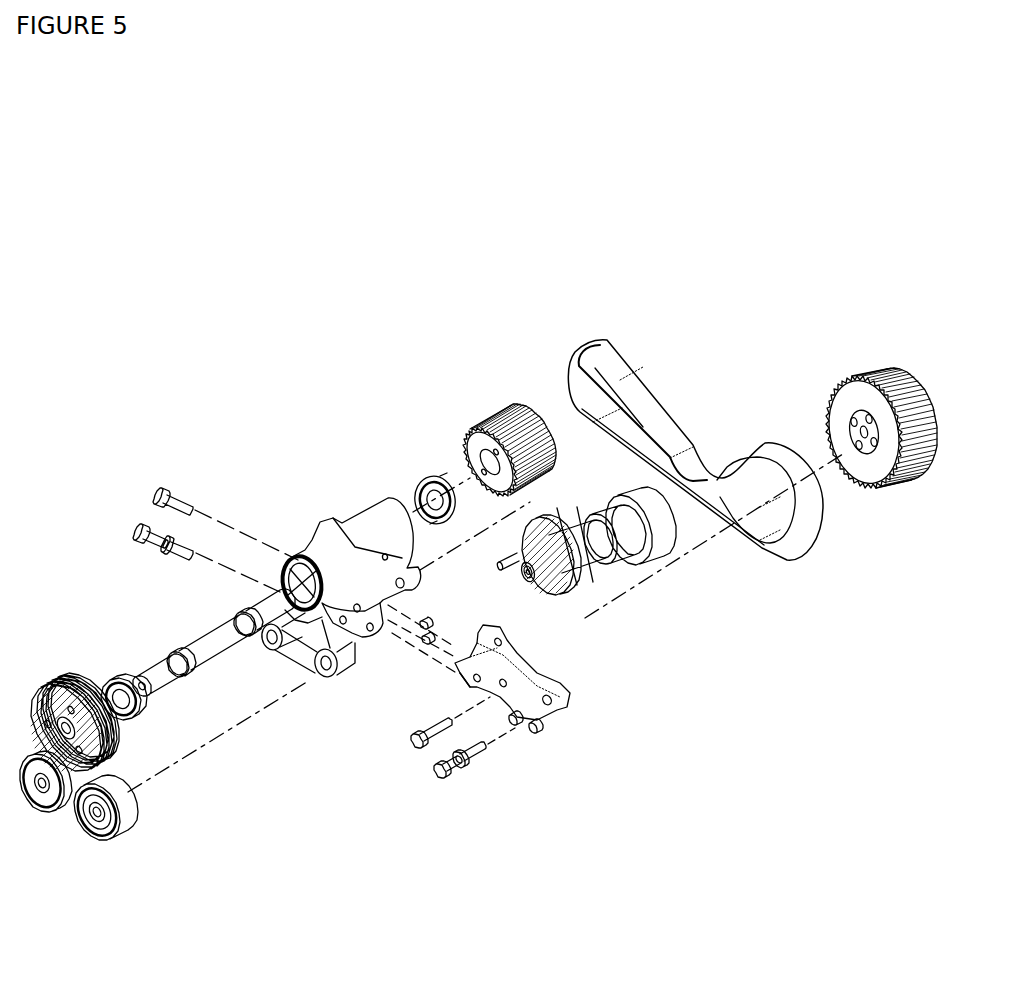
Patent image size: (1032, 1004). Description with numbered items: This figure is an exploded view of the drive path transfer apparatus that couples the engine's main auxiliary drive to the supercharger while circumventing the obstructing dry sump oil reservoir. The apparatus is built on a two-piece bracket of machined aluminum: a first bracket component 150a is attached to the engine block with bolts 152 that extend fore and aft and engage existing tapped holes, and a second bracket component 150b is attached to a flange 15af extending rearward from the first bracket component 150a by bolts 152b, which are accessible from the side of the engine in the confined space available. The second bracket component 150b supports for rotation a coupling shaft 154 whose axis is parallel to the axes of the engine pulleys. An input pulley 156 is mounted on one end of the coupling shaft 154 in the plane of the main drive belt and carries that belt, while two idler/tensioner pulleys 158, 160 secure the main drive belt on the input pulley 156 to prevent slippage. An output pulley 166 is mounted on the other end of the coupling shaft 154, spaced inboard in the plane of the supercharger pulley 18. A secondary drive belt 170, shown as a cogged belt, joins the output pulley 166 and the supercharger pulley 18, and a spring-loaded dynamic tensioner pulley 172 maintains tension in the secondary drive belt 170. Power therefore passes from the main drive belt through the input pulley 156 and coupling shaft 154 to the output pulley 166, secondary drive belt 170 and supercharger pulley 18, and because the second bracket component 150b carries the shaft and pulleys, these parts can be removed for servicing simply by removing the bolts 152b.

The supercharger pulley 18 is at (874, 362).
The first bracket component 150a is at (563, 732).
The second bracket component 150b is at (320, 503).
The bolts 152 is at (434, 794).
The bolts 152b is at (148, 478).
The coupling shaft 154 is at (134, 653).
The input pulley 156 is at (97, 841).
The idler/tensioner pulley 158 is at (38, 826).
The idler/tensioner pulley 160 is at (136, 849).
The output pulley 166 is at (512, 392).
The secondary drive belt 170 is at (630, 336).
The spring-loaded dynamic tensioner pulley 172 is at (617, 576).
The flange 15af is at (457, 683).